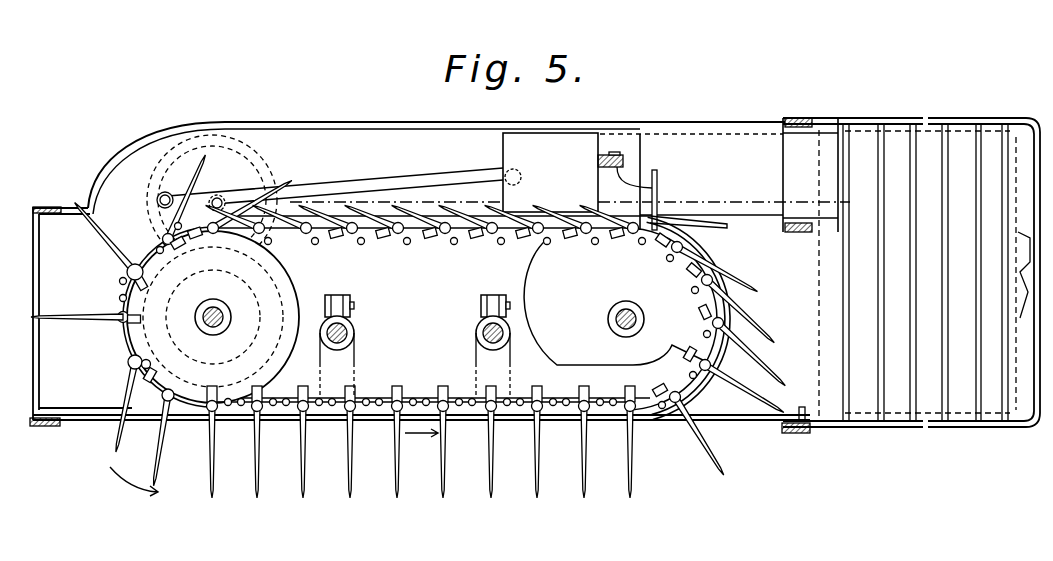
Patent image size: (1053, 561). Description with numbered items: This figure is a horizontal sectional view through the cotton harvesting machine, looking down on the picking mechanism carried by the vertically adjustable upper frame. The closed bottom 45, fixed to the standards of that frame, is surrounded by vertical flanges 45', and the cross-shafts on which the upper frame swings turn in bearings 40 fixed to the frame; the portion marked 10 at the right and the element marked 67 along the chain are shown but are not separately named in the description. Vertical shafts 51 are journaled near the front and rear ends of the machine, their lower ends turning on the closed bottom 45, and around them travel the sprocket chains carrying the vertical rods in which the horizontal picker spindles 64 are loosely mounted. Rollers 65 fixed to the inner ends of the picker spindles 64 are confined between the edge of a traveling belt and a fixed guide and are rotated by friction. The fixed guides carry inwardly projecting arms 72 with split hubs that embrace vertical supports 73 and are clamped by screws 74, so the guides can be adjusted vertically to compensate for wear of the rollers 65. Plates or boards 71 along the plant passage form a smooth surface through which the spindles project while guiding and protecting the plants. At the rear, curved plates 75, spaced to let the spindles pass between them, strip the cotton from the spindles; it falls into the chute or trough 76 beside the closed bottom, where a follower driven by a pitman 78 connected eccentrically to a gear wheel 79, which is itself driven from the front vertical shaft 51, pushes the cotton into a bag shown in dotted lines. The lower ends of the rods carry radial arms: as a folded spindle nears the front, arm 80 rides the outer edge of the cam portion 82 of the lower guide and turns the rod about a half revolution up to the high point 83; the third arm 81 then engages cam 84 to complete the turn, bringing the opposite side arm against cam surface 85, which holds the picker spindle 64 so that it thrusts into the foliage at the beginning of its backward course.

The main frame 10 is at (795, 203).
The bottom 45 is at (420, 334).
The vertical flanges 45' is at (436, 168).
The bearings 40 is at (125, 222).
The vertical shafts 51 is at (232, 320).
The picker spindles 64 is at (490, 472).
The rollers 65 is at (385, 238).
The conveyor chain 67 is at (420, 318).
The plates or boards 71 is at (293, 421).
The inwardly projecting arms 72 is at (477, 352).
The vertical supports 73 is at (500, 330).
The screws 74 is at (350, 307).
The curved plates 75 is at (710, 256).
The chute or trough 76 is at (690, 182).
The pitman 78 is at (422, 182).
The gear wheel 79 is at (226, 133).
The radial arm 80 is at (130, 358).
The third arm 81 is at (143, 361).
The cam portion 82 is at (153, 273).
The high point 83 is at (132, 330).
The cam 84 is at (180, 368).
The cam surface 85 is at (140, 376).